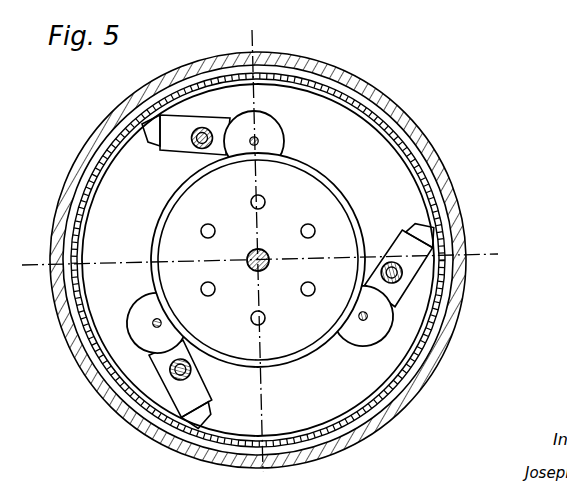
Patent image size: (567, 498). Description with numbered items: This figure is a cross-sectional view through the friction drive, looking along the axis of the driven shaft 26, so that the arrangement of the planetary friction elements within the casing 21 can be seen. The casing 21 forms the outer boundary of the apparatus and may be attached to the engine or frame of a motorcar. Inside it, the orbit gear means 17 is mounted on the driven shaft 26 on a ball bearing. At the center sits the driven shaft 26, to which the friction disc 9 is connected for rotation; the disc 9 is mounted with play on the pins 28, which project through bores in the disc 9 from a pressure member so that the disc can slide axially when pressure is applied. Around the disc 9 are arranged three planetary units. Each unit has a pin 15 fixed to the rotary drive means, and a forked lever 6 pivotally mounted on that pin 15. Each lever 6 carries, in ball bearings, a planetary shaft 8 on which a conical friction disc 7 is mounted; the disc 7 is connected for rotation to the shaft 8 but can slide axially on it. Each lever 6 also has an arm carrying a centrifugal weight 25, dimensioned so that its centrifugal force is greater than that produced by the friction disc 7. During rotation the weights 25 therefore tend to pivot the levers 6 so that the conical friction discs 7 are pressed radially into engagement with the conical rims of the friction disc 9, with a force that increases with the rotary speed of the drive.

The forked lever 6 is at (455, 254).
The conical friction disc 7 is at (387, 323).
The planetary shaft 8 is at (367, 318).
The friction disc 9 is at (293, 340).
The pin 15 is at (412, 262).
The orbit gear means 17 is at (132, 402).
The casing 21 is at (78, 368).
The centrifugal weight 25 is at (423, 232).
The driven rotary shaft means 26 is at (248, 257).
The pin 28 is at (315, 228).